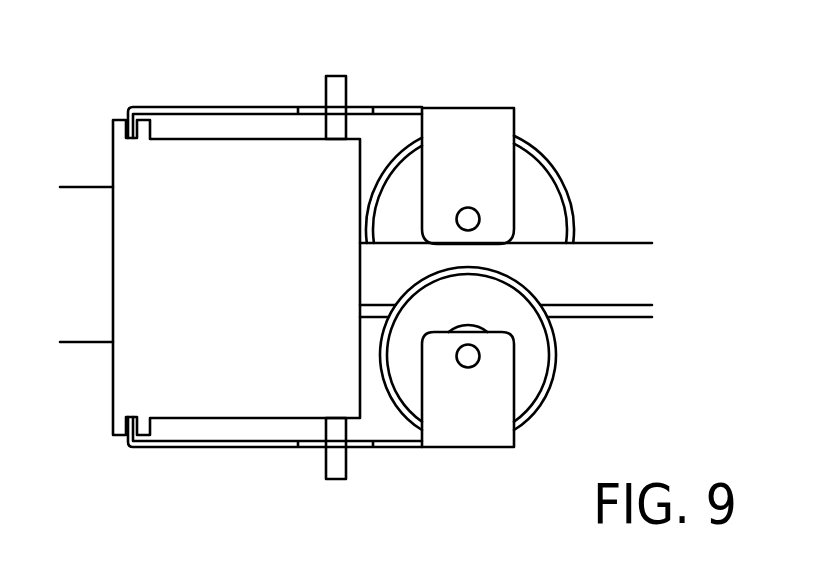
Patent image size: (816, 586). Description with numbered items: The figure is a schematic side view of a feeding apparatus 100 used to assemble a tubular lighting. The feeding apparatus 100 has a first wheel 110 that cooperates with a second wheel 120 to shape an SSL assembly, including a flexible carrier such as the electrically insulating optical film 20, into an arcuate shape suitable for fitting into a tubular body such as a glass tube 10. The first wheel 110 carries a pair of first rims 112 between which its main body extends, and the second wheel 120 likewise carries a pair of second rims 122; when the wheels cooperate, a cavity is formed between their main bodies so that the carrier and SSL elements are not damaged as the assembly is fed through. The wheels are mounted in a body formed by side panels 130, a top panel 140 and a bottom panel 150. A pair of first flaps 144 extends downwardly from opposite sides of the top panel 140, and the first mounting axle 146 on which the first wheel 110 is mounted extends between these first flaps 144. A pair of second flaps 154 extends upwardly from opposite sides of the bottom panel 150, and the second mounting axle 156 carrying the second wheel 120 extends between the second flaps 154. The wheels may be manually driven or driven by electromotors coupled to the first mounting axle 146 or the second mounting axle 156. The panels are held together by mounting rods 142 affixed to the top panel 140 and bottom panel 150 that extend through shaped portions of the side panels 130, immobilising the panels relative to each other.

The glass tube 10 is at (88, 202).
The electrically insulating optical film 20 is at (633, 274).
The feeding apparatus 100 is at (598, 85).
The first wheel 110 is at (540, 188).
The first rims 112 is at (565, 212).
The second wheel 120 is at (528, 384).
The second rims 122 is at (552, 360).
The side panels 130 is at (183, 393).
The top panel 140 is at (218, 107).
The mounting rods 142 is at (337, 77).
The first flaps 144 is at (465, 128).
The first mounting axle 146 is at (462, 221).
The bottom panel 150 is at (265, 448).
The second flaps 154 is at (465, 425).
The second mounting axle 156 is at (461, 357).